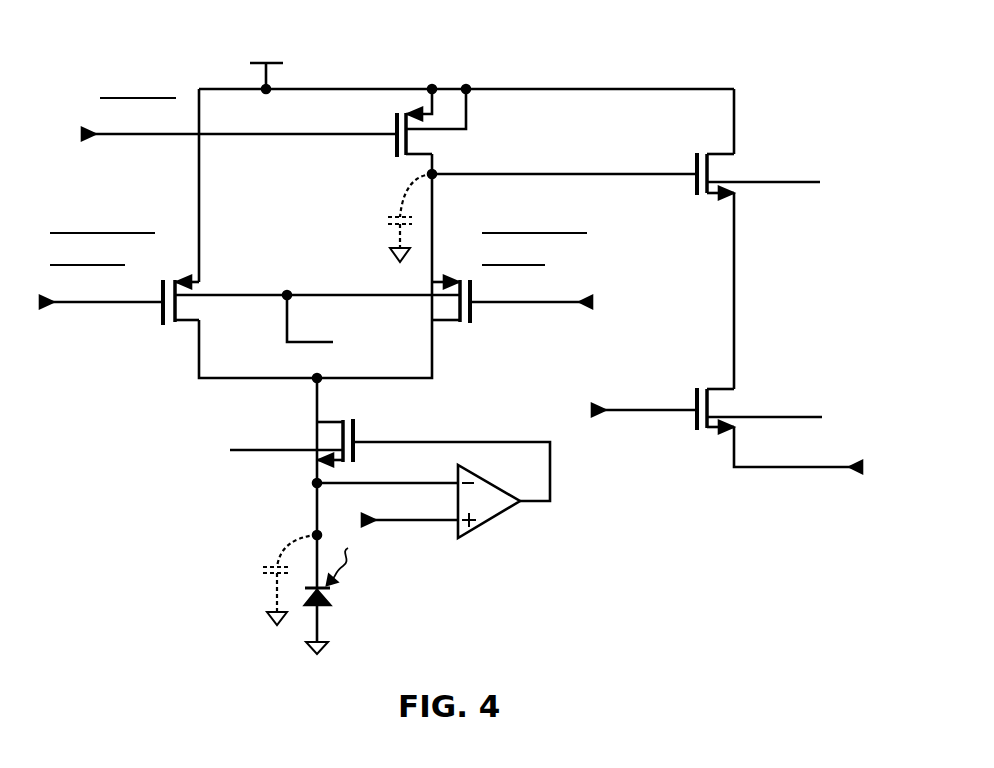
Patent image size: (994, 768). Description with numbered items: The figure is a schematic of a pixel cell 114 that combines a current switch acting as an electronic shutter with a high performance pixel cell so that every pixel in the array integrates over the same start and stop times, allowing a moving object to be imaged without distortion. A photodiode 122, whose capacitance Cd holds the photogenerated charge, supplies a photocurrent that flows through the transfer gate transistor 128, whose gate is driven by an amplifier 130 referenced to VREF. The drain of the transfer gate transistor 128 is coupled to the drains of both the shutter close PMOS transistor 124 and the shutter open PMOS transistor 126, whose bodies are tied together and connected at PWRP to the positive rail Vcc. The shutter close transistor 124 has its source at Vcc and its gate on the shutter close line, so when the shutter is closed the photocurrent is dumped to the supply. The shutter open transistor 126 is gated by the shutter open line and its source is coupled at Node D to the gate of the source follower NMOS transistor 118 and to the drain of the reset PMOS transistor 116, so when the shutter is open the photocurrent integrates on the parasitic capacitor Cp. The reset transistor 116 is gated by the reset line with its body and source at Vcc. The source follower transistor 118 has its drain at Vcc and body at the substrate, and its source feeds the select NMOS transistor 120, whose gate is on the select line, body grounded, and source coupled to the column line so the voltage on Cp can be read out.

The pixel cell 114 is at (451, 338).
The reset PMOS transistor 116 is at (395, 151).
The source follower NMOS transistor 118 is at (712, 152).
The select NMOS transistor 120 is at (716, 388).
The photodiode 122 is at (333, 600).
The shutter close PMOS transistor 124 is at (160, 316).
The shutter open PMOS transistor 126 is at (474, 318).
The transfer gate transistor 128 is at (357, 424).
The comparator 130 is at (501, 516).